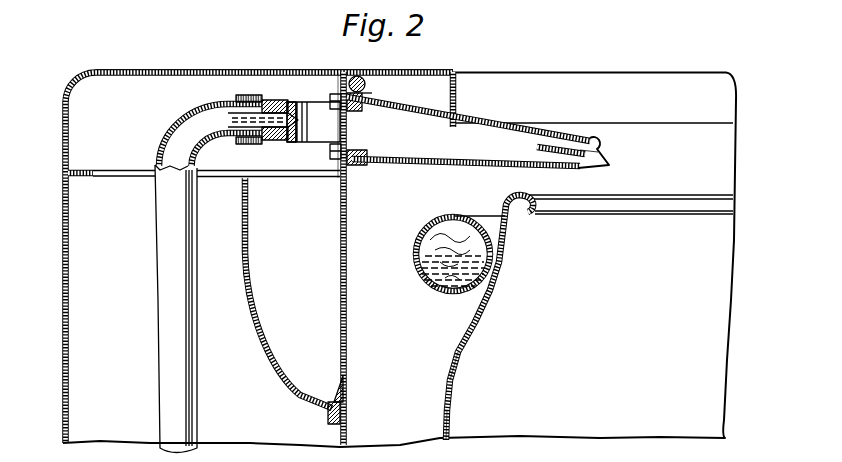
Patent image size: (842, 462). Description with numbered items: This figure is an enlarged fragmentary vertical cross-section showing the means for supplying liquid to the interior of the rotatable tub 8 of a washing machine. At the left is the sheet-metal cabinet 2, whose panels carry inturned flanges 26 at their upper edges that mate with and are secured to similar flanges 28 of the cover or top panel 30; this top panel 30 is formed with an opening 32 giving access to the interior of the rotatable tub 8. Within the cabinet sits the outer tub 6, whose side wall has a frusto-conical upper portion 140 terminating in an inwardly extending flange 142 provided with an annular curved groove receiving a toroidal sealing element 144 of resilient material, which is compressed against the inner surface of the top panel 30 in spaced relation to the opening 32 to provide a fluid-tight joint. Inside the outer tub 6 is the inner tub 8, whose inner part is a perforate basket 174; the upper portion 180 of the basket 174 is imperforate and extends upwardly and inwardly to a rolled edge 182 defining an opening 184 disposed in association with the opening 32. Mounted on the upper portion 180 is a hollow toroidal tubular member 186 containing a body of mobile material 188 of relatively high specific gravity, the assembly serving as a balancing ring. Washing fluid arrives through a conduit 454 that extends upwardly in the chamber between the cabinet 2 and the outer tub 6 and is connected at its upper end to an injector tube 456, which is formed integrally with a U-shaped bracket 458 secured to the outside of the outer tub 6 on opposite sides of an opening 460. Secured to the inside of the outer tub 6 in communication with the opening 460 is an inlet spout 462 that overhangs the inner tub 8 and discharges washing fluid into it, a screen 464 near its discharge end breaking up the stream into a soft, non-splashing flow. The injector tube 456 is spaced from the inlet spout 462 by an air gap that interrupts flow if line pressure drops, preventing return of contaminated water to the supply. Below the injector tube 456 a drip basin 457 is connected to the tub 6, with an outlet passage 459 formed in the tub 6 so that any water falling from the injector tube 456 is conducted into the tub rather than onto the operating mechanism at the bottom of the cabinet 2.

The cabinet 2 is at (64, 313).
The outer tub 6 is at (348, 277).
The rotatable tub 8 is at (454, 358).
The inturned flanges 26 is at (82, 178).
The flanges of the cover 28 is at (82, 172).
The cover or top panel 30 is at (120, 72).
The opening 32 is at (599, 146).
The upper portion of the side wall 140 is at (345, 326).
The inwardly extending flange 142 is at (373, 92).
The sealing element 144 is at (358, 76).
The perforate basket 174 is at (450, 413).
The upper portion of the basket 180 is at (479, 313).
The rolled edge 182 is at (525, 196).
The opening 184 is at (700, 195).
The tubular member 186 is at (416, 246).
The body of mobile material 188 is at (438, 285).
The conduit 454 is at (165, 357).
The injector tube 456 is at (280, 103).
The drip basin 457 is at (276, 355).
The U-shaped bracket 458 is at (300, 145).
The outlet passage 459 is at (348, 398).
The opening 460 is at (348, 124).
The inlet spout 462 is at (411, 162).
The screen 464 is at (553, 146).